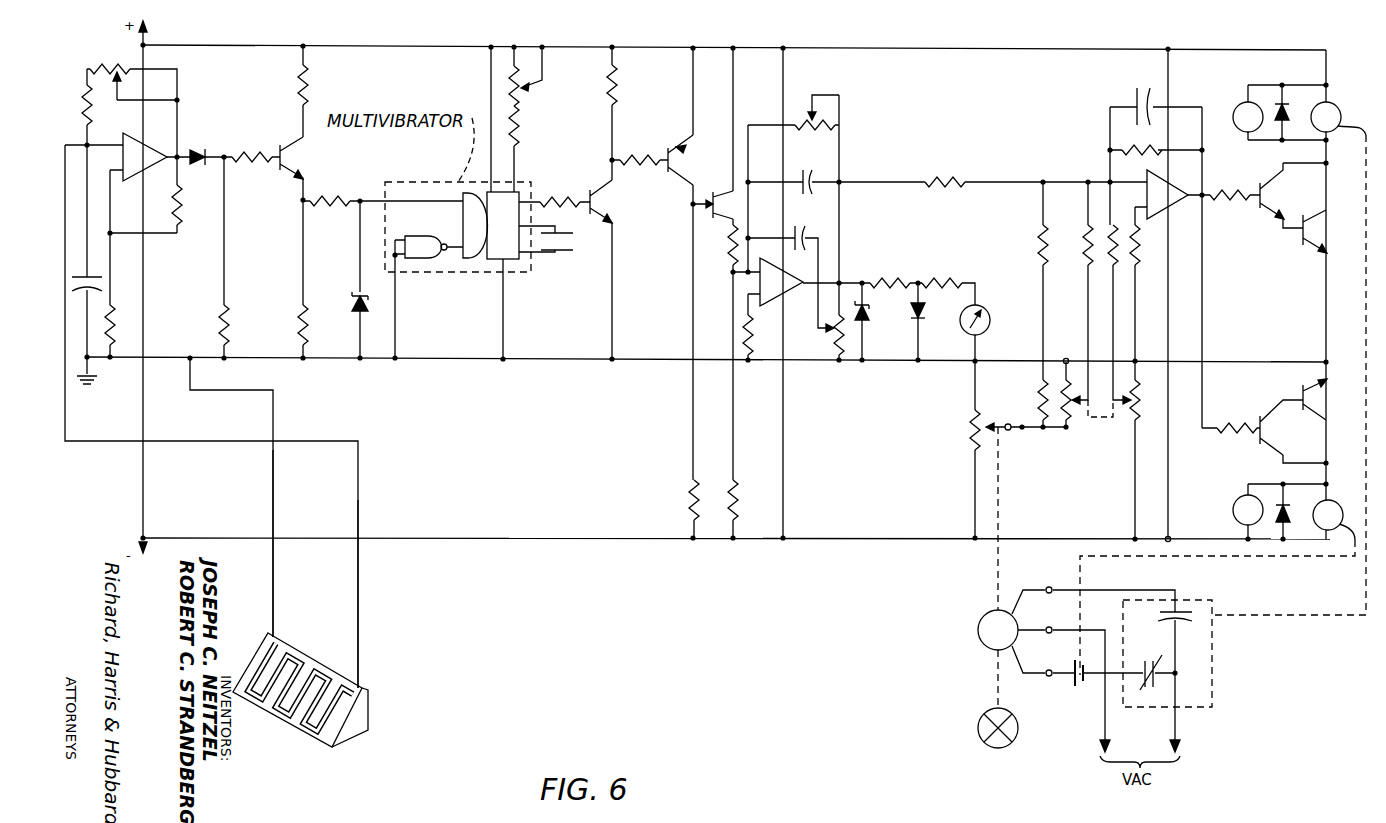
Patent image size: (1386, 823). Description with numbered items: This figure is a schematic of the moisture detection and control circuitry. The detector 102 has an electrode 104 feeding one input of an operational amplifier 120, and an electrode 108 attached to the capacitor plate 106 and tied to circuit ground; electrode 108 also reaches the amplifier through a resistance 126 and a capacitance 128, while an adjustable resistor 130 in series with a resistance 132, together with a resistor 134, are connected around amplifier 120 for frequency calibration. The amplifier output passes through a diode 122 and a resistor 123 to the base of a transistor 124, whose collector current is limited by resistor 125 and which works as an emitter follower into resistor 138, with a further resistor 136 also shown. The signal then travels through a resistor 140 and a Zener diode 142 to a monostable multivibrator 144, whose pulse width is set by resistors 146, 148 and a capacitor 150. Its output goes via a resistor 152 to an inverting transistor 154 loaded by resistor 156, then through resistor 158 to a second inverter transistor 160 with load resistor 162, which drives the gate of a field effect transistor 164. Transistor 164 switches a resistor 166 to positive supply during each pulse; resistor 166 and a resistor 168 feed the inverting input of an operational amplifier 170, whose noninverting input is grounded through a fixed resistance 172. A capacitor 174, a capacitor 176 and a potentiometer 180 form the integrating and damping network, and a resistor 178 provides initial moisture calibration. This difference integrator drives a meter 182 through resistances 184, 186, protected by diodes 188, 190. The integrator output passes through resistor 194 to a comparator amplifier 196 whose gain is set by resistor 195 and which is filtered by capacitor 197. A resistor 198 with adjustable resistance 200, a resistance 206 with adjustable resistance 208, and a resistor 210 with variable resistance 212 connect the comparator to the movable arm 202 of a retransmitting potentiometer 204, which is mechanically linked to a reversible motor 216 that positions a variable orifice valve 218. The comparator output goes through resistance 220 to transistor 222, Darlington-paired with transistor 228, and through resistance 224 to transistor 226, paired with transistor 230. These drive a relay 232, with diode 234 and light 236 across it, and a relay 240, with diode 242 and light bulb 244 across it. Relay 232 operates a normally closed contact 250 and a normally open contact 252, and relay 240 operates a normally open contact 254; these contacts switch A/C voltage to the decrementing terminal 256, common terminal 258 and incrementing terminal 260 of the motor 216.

The heating element 102 is at (283, 713).
The electrode 104 is at (359, 666).
The capacitor plate 106 is at (312, 668).
The electrode 108 is at (276, 612).
The operational amplifier 120 is at (122, 140).
The diode 122 is at (199, 151).
The resistor 123 is at (252, 164).
The transistor 124 is at (298, 150).
The resistor 125 is at (308, 81).
The resistance 126 is at (112, 321).
The capacitance 128 is at (100, 284).
The adjustable resistor 130 is at (117, 62).
The resistance 132 is at (84, 100).
The resistor 134 is at (180, 200).
The resistor 136 is at (236, 318).
The emitter follower resistor 138 is at (300, 334).
The resistor 140 is at (352, 191).
The Zener diode 142 is at (353, 300).
The monostable multivibrator 144 is at (427, 180).
The resistor 146 is at (520, 93).
The resistor 148 is at (520, 132).
The capacitor 150 is at (546, 241).
The current limiting resistor 152 is at (560, 198).
The transistor 154 is at (596, 196).
The resistor 156 is at (628, 90).
The current limiting resistor 158 is at (638, 155).
The transistor 160 is at (670, 163).
The collector load resistor 162 is at (692, 491).
The field effect transistor 164 is at (712, 216).
The resistor 166 is at (726, 255).
The resistor 168 is at (735, 492).
The operational amplifier 170 is at (758, 285).
The fixed resistance 172 is at (746, 322).
The capacitor 174 is at (810, 168).
The capacitor 176 is at (808, 226).
The resistor 178 is at (800, 120).
The potentiometer 180 is at (835, 341).
The meter 182 is at (986, 313).
The resistance 184 is at (885, 276).
The resistance 186 is at (952, 276).
The diode 188 is at (869, 314).
The diode 190 is at (925, 314).
The resistor 194 is at (950, 175).
The resistor 195 is at (1141, 147).
The amplifier 196 is at (1178, 205).
The capacitor 197 is at (1158, 69).
The resistor 198 is at (1052, 241).
The adjustable resistance 200 is at (1042, 396).
The movable arm 202 is at (1005, 424).
The retransmitting potentiometer 204 is at (972, 437).
The resistance 206 is at (1086, 245).
The adjustable resistance 208 is at (1069, 413).
The resistor 210 is at (1108, 259).
The variable resistance 212 is at (1128, 411).
The reversible motor 216 is at (978, 630).
The variable orifice valve 218 is at (978, 733).
The resistance 220 is at (1230, 190).
The transistor 222 is at (1271, 192).
The resistance 224 is at (1231, 434).
The transistor 226 is at (1262, 418).
The transistor 228 is at (1302, 238).
The transistor 230 is at (1300, 393).
The relay 232 is at (1341, 112).
The diode 234 is at (1286, 105).
The light 236 is at (1237, 105).
The relay 240 is at (1340, 541).
The diode 242 is at (1290, 531).
The light bulb 244 is at (1235, 511).
The normally closed contact 250 is at (1148, 659).
The normally open contact 252 is at (1162, 612).
The normally open contact 254 is at (1078, 686).
The decrementing terminal 256 is at (1051, 586).
The common terminal 258 is at (1052, 627).
The incrementing terminal 260 is at (1052, 670).